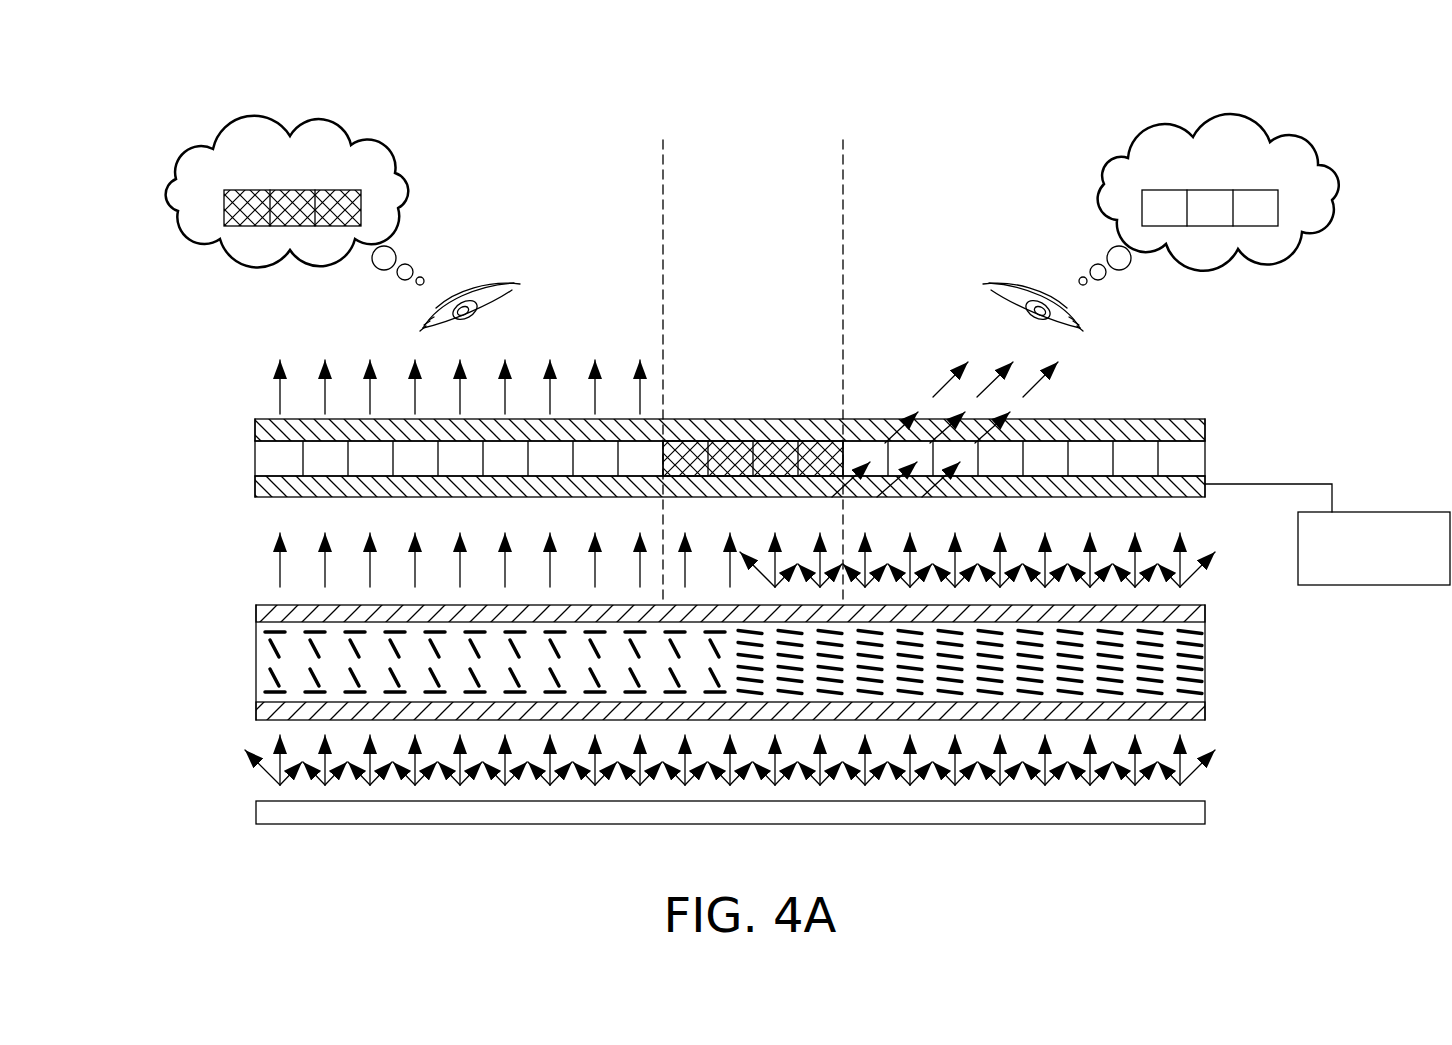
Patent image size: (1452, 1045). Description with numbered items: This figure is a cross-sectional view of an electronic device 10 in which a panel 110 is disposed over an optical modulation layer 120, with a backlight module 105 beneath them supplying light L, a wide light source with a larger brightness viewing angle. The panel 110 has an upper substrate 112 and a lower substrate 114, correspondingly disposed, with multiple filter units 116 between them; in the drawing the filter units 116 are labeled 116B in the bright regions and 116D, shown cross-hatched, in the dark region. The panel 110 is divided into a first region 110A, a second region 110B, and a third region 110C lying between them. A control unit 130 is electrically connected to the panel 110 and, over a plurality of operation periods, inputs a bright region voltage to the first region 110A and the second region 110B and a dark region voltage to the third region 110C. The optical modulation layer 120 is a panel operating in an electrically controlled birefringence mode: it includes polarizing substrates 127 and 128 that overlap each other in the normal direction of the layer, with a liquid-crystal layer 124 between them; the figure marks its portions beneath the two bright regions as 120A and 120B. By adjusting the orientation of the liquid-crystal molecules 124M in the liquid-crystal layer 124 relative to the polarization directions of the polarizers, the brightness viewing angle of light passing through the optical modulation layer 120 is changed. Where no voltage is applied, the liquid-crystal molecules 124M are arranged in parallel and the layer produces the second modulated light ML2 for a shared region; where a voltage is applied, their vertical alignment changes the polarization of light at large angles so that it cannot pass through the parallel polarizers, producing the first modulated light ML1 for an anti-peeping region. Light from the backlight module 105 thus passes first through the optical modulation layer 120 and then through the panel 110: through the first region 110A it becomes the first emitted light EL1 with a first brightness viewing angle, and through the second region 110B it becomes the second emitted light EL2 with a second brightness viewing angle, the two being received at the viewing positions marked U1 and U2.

The electronic device 10 is at (113, 78).
The backlight module 105 is at (256, 812).
The panel 110 is at (226, 456).
The first region 110A is at (257, 100).
The second region 110B is at (1248, 100).
The third region 110C is at (665, 100).
The upper substrate 112 is at (1182, 432).
The lower substrate 114 is at (1182, 488).
The filter units 116 is at (851, 382).
The bright pixels 116B is at (1182, 460).
The dark pixels 116D is at (778, 462).
The optical modulation layer 120 is at (226, 661).
The first light control region 120A is at (752, 836).
The second light control region 120B is at (1205, 836).
The liquid-crystal layer 124 is at (1190, 690).
The liquid-crystal molecules 124M is at (1188, 660).
The polarizing substrate 127 is at (1195, 618).
The polarizing substrate 128 is at (1192, 714).
The control unit 130 is at (1352, 564).
The first emitted light EL1 is at (425, 387).
The second emitted light EL2 is at (945, 427).
The first modulated light ML1 is at (465, 561).
The second modulated light ML2 is at (1014, 561).
The light L is at (742, 763).
The first user U1 is at (370, 227).
The second user U2 is at (1161, 226).